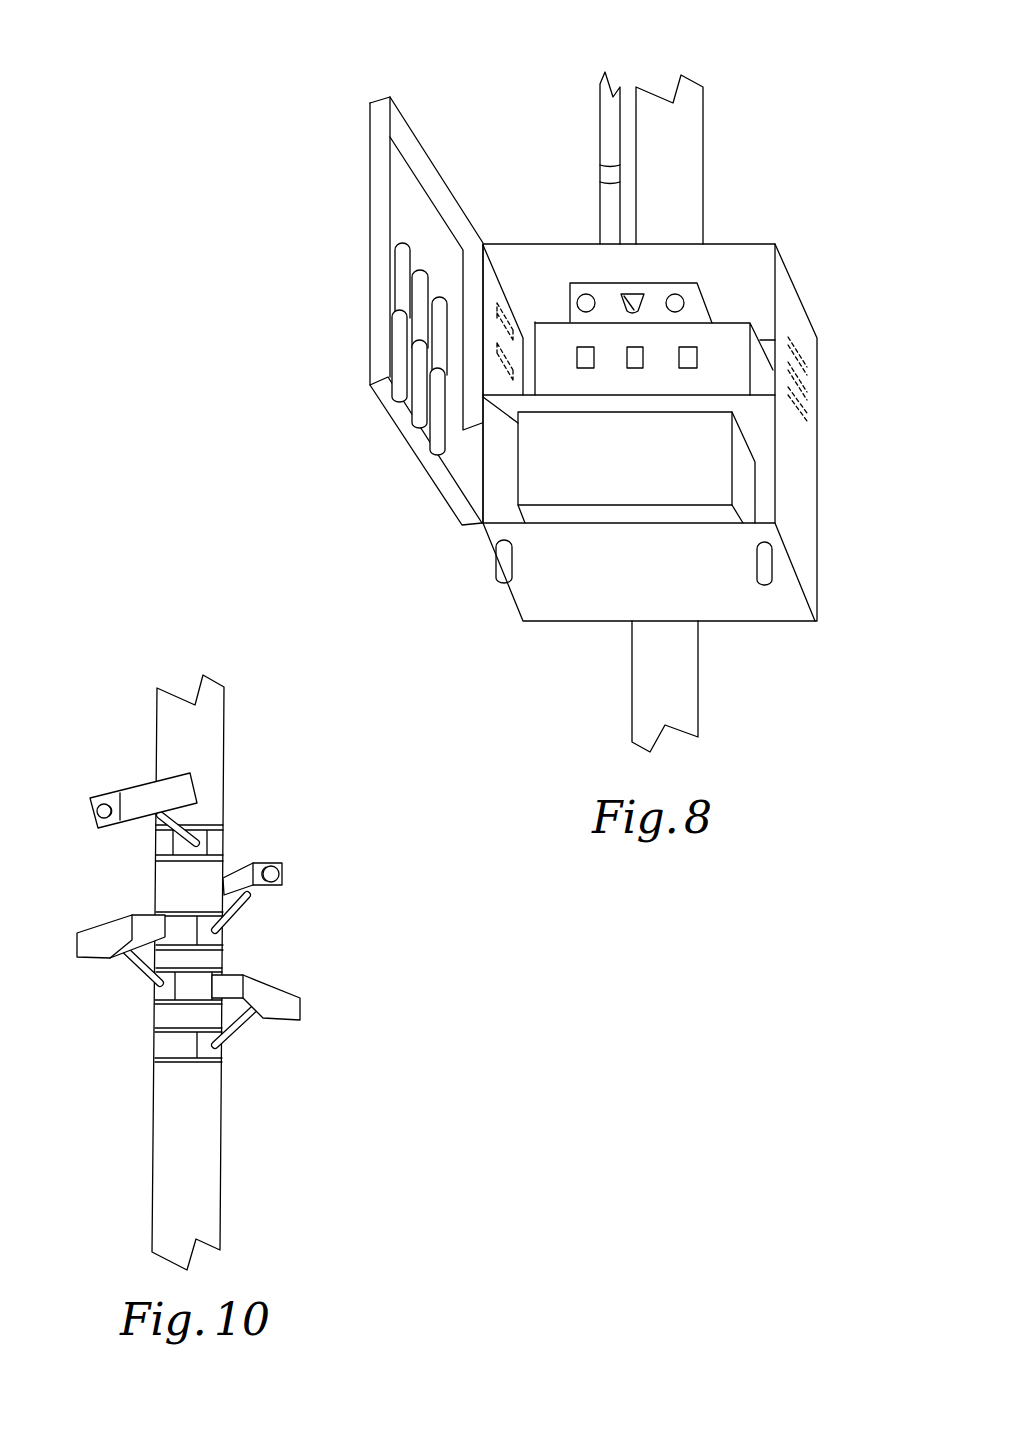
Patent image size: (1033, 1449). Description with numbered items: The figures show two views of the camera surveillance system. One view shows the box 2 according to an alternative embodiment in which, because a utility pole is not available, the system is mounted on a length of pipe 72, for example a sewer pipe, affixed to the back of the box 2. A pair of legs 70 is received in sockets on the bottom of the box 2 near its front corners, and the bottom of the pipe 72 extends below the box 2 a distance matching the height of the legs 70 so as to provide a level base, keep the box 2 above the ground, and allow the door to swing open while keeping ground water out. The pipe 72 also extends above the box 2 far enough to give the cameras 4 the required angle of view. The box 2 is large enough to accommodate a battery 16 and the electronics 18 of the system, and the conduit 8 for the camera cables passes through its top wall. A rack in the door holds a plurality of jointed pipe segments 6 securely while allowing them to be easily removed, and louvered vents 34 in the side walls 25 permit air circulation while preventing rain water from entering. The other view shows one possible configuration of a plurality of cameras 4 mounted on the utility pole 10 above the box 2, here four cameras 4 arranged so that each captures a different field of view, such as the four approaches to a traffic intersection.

In FIG. 8, the box 2 is at (570, 383).
In FIG. 10, the cameras 4 is at (102, 795).
In FIG. 8, the jointed pipe segments 6 is at (446, 234).
In FIG. 8, the conduit 8 is at (584, 131).
In FIG. 10, the utility pole 10 is at (178, 1122).
In FIG. 8, the battery 16 is at (695, 457).
In FIG. 8, the electronics 18 is at (642, 387).
In FIG. 8, the side walls 25 is at (495, 482).
In FIG. 8, the louvered vents 34 is at (800, 352).
In FIG. 8, the legs 70 is at (497, 557).
In FIG. 8, the pipe 72 is at (682, 153).